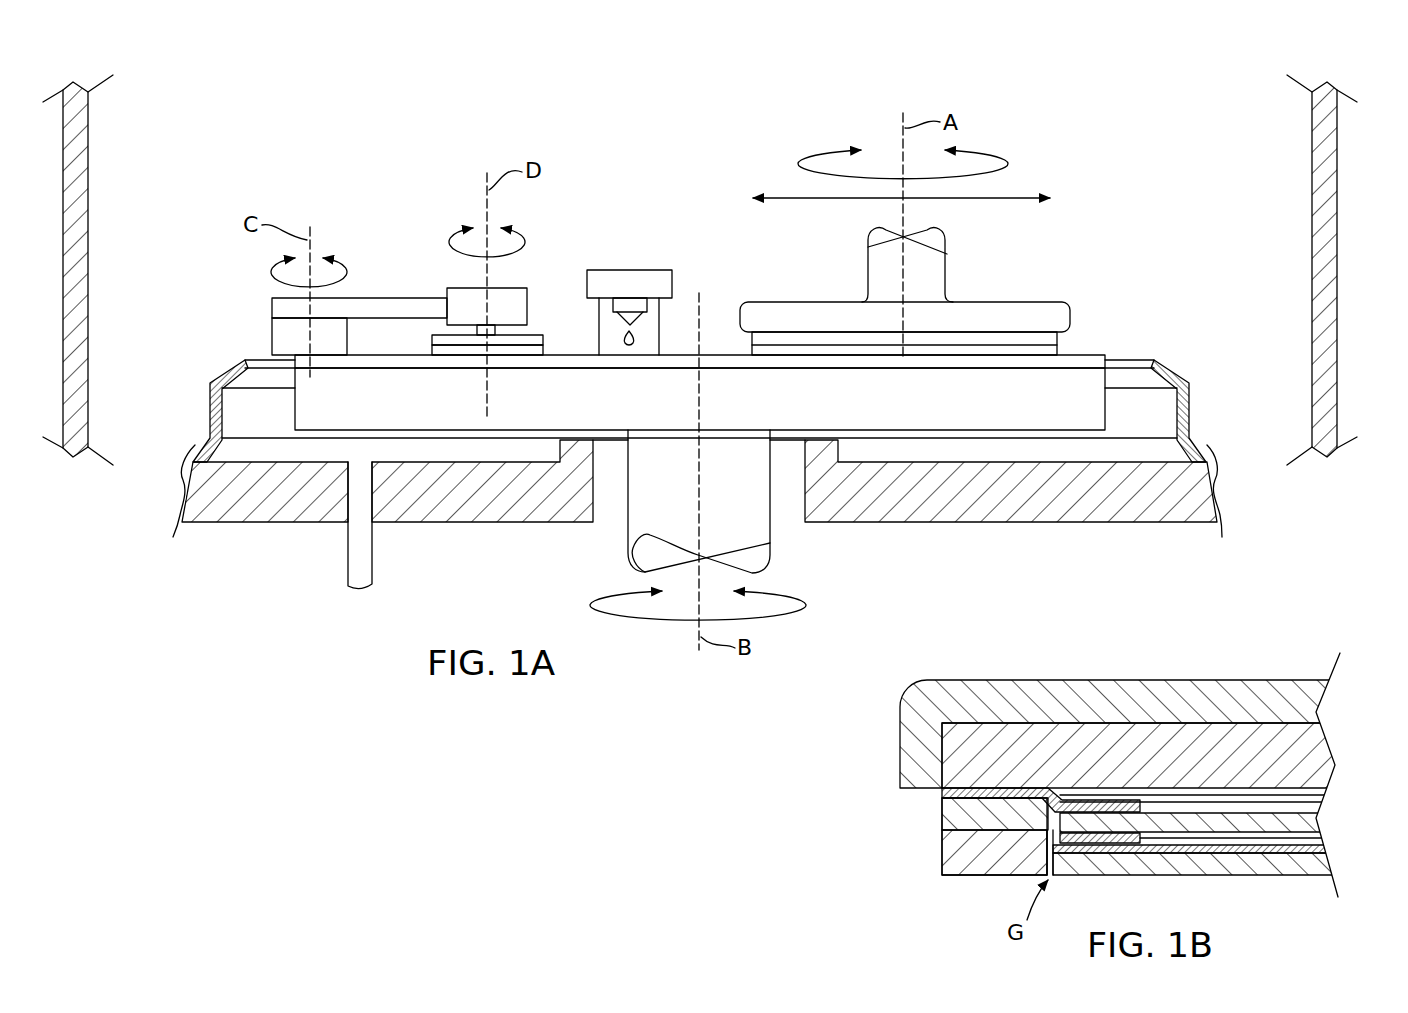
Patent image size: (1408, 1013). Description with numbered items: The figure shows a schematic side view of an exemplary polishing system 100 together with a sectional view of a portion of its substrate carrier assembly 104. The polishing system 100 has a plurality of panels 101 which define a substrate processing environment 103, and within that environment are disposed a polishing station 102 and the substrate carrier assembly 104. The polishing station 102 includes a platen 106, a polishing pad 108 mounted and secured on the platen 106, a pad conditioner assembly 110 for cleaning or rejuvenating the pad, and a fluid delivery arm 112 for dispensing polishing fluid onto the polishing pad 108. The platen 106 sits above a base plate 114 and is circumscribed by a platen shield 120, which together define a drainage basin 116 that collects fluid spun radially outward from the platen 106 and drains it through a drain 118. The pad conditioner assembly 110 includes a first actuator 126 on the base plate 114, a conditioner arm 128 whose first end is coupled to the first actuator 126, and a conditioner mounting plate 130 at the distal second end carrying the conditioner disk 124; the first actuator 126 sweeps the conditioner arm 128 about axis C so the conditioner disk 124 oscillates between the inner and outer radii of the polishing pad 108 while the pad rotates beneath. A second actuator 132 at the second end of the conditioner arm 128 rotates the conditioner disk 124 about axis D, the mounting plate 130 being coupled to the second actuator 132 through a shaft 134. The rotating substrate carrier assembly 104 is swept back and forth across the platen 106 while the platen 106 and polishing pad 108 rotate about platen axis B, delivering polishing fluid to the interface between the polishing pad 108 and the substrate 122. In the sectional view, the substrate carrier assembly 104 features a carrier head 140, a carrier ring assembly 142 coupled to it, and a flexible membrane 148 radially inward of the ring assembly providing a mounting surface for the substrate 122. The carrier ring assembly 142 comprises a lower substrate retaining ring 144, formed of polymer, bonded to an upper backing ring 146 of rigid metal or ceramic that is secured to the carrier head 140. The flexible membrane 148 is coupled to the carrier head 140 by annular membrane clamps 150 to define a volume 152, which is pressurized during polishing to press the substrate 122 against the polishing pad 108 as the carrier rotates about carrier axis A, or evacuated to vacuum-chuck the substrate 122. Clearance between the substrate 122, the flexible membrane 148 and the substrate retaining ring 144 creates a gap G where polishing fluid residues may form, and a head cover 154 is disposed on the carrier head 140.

In FIG. 1A, the polishing system 100 is at (1165, 115).
In FIG. 1A, the panels 101 is at (92, 166).
In FIG. 1A, the polishing station 102 is at (1105, 238).
In FIG. 1A, the substrate processing environment 103 is at (716, 186).
In FIG. 1A, the substrate carrier assembly 104 is at (1069, 296).
In FIG. 1B, the substrate carrier assembly 104 is at (970, 655).
In FIG. 1A, the platen 106 is at (985, 409).
In FIG. 1A, the polishing pad 108 is at (1083, 357).
In FIG. 1A, the pad conditioner assembly 110 is at (323, 181).
In FIG. 1A, the fluid delivery arm 112 is at (648, 280).
In FIG. 1A, the base plate 114 is at (1053, 500).
In FIG. 1A, the drainage basin 116 is at (1152, 418).
In FIG. 1A, the drain 118 is at (372, 560).
In FIG. 1A, the platen shield 120 is at (210, 402).
In FIG. 1B, the substrate 122 is at (1270, 865).
In FIG. 1A, the conditioner disk 124 is at (433, 352).
In FIG. 1A, the first actuator 126 is at (272, 336).
In FIG. 1A, the conditioner arm 128 is at (278, 306).
In FIG. 1A, the conditioner mounting plate 130 is at (543, 340).
In FIG. 1A, the second actuator 132 is at (452, 292).
In FIG. 1A, the shaft 134 is at (525, 326).
In FIG. 1B, the carrier head 140 is at (1325, 728).
In FIG. 1B, the carrier ring assembly 142 is at (915, 830).
In FIG. 1B, the substrate retaining ring 144 is at (985, 860).
In FIG. 1B, the backing ring 146 is at (945, 806).
In FIG. 1B, the flexible membrane 148 is at (1325, 848).
In FIG. 1B, the annular membrane clamps 150 is at (1150, 838).
In FIG. 1B, the volume 152 is at (1320, 822).
In FIG. 1B, the head cover 154 is at (1125, 690).